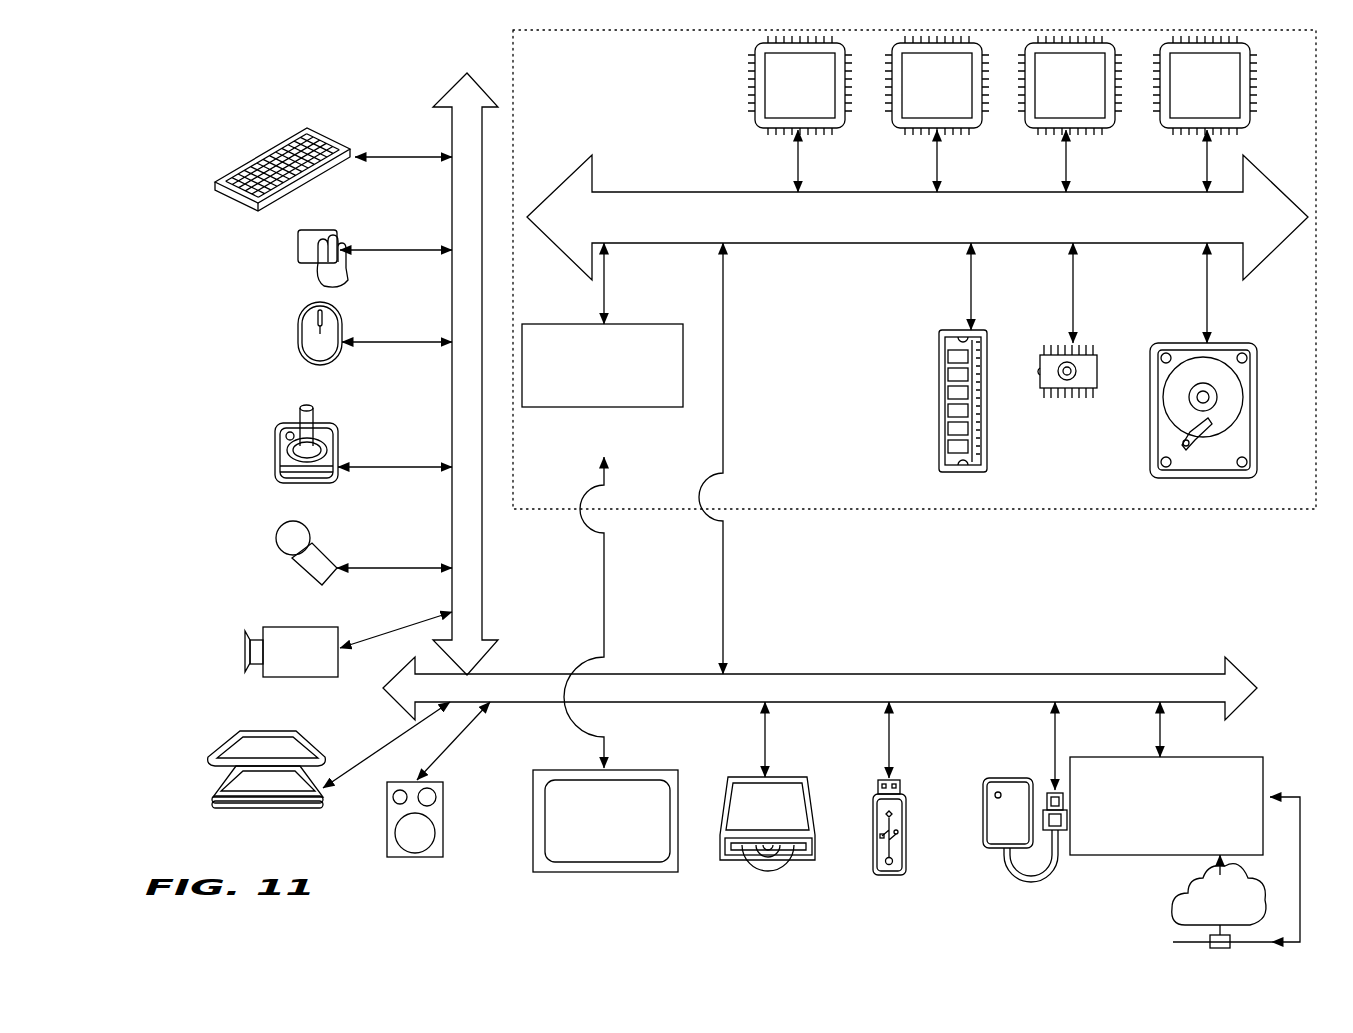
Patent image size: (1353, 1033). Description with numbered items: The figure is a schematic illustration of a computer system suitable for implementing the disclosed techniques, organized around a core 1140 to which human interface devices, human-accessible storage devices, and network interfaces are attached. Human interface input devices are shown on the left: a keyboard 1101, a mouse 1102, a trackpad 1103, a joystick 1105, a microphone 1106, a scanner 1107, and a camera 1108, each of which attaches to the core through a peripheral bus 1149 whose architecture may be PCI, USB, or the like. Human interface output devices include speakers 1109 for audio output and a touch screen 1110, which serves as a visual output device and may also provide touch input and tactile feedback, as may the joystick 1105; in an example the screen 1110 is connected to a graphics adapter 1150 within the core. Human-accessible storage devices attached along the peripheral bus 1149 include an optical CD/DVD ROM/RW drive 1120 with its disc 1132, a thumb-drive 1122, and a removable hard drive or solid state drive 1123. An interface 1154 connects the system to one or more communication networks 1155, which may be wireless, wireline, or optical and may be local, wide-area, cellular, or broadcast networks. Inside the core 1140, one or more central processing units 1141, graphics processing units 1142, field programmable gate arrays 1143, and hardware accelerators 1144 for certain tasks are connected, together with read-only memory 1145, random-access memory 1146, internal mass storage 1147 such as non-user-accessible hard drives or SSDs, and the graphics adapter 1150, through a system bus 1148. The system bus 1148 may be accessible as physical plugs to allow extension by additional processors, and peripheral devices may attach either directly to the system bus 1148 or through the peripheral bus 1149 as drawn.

The keyboard 1101 is at (213, 184).
The mouse 1102 is at (297, 332).
The trackpad 1103 is at (297, 250).
The joystick 1105 is at (276, 466).
The microphone 1106 is at (279, 540).
The scanner 1107 is at (211, 794).
The camera 1108 is at (246, 650).
The speakers 1109 is at (416, 858).
The touch screen 1110 is at (603, 874).
The CD/DVD ROM/RW 1120 is at (813, 862).
The thumb-drive 1122 is at (893, 878).
The removable hard drive or solid state drive 1123 is at (996, 850).
The optical disc 1132 is at (750, 868).
The core 1140 is at (908, 510).
The Central Processing Units (CPU) 1141 is at (800, 114).
The Graphics Processing Units (GPU) 1142 is at (937, 114).
The Field Programmable Gate Areas (FPGA) 1143 is at (1070, 114).
The hardware accelerators 1144 is at (1205, 114).
The Read-only memory (ROM) 1145 is at (1063, 399).
The Random-access memory 1146 is at (936, 422).
The internal mass storage 1147 is at (1160, 342).
The system bus 1148 is at (917, 217).
The peripheral bus 1149 is at (445, 115).
The graphics adapter 1150 is at (602, 325).
The interface 1154 is at (1185, 822).
The communication networks 1155 is at (1176, 912).